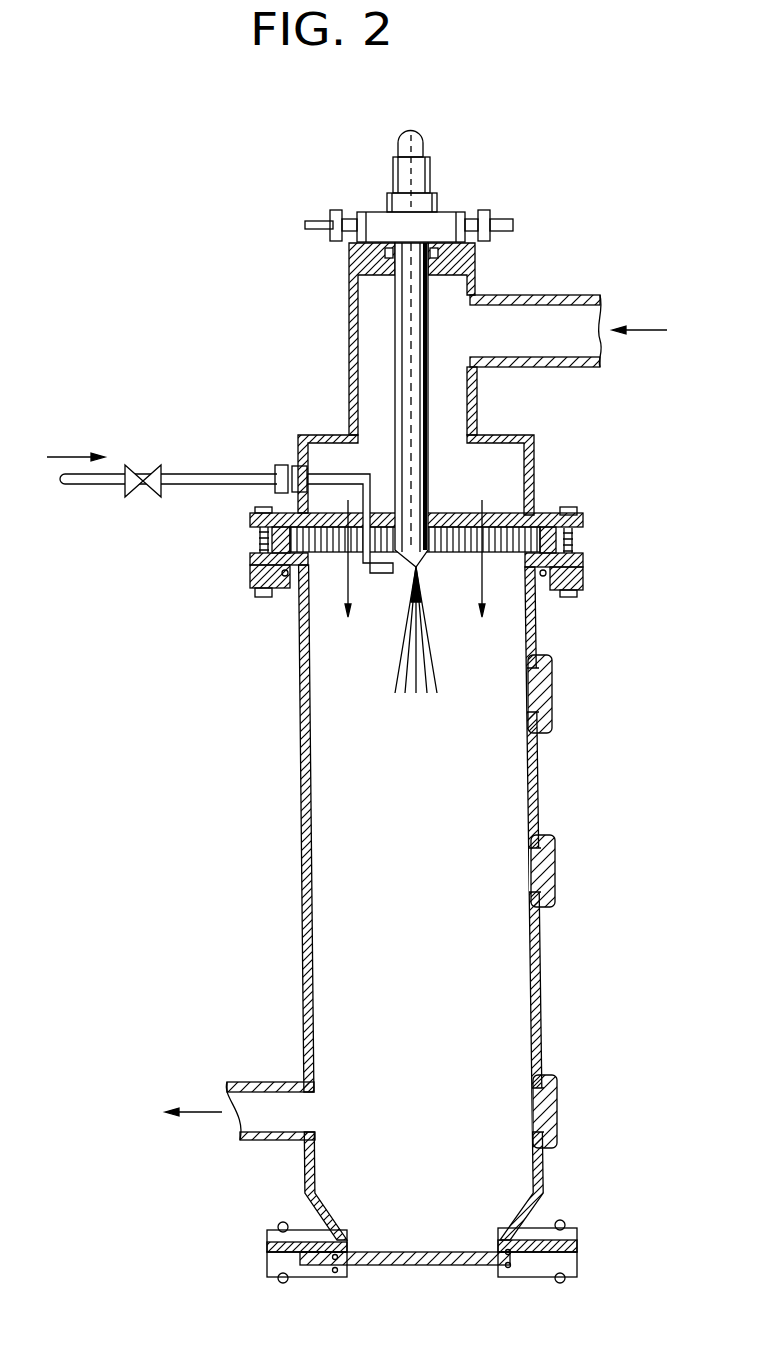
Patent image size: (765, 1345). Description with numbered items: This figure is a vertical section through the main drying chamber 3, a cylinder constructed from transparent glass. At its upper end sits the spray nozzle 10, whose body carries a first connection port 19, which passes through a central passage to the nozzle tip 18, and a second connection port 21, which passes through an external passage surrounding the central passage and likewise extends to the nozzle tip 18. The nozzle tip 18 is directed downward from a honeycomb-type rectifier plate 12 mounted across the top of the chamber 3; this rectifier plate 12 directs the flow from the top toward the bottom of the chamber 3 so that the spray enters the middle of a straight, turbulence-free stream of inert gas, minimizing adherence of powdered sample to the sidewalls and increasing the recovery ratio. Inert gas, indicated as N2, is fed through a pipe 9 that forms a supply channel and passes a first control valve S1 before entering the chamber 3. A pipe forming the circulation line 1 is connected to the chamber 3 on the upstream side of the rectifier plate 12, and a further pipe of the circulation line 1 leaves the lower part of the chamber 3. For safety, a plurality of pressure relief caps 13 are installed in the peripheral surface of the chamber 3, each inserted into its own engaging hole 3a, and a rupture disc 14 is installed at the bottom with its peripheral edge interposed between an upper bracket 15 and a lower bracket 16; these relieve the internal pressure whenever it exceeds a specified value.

The circulation line 1 is at (565, 295).
The main drying chamber 3 is at (298, 844).
The engaging hole 3a is at (530, 675).
The pipe 9 is at (215, 475).
The spray nozzle 10 is at (388, 380).
The honeycomb-type rectifier plate 12 is at (325, 553).
The pressure relief cap 13 is at (552, 687).
The rupture disc 14 is at (438, 1267).
The upper bracket 15 is at (577, 1232).
The lower bracket 16 is at (577, 1267).
The nozzle tip 18 is at (422, 568).
The first connection port 19 is at (331, 213).
The second connection port 21 is at (501, 211).
The first control valve S1 is at (137, 497).
The nitrogen gas N2 is at (72, 441).